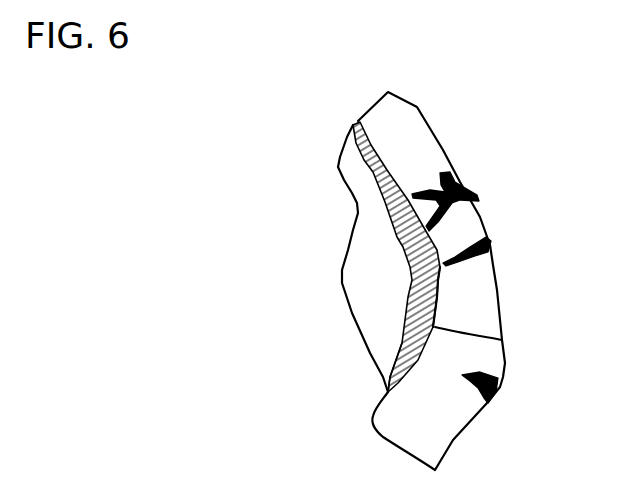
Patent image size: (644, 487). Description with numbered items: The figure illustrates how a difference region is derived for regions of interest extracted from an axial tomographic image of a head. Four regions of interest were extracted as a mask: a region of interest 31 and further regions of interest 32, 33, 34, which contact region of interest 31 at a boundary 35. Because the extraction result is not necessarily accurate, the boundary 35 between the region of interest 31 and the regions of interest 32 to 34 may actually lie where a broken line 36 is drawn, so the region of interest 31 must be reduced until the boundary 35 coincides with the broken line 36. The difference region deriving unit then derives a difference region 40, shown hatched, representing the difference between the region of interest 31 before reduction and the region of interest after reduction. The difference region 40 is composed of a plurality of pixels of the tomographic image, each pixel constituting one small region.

The region of interest 31 is at (364, 195).
The difference region 40 is at (353, 125).
The region of interest 32 is at (420, 138).
The region of interest 33 is at (477, 270).
The region of interest 34 is at (490, 365).
The boundary 35 is at (440, 310).
The broken line 36 is at (393, 352).